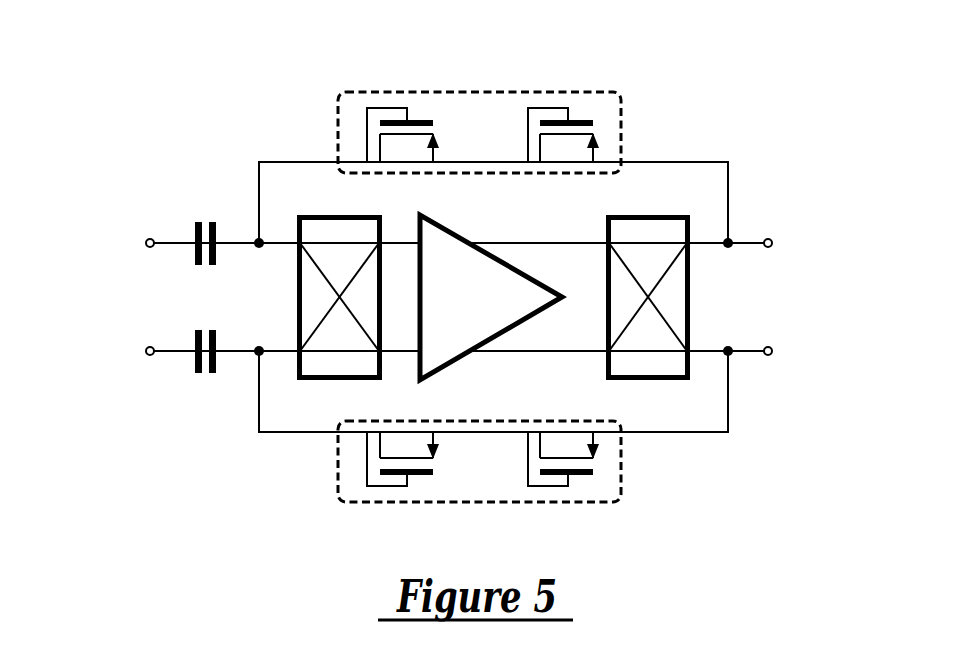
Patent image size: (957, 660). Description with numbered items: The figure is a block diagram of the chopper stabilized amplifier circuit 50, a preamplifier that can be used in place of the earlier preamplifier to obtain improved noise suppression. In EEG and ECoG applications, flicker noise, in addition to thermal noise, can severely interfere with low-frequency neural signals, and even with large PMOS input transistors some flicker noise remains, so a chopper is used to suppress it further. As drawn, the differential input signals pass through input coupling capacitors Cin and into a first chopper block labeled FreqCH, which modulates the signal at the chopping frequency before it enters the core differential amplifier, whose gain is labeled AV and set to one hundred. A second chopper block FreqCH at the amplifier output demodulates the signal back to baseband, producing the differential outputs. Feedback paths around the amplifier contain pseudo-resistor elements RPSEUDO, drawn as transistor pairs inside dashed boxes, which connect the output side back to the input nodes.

The chopper stabilized amplifier circuit 50 is at (463, 281).
The input coupling capacitor Cin is at (205, 302).
The chopper switch FreqCH is at (338, 205).
The differential amplifier AV is at (491, 297).
The pseudo-resistor feedback RPSEUDO is at (479, 297).